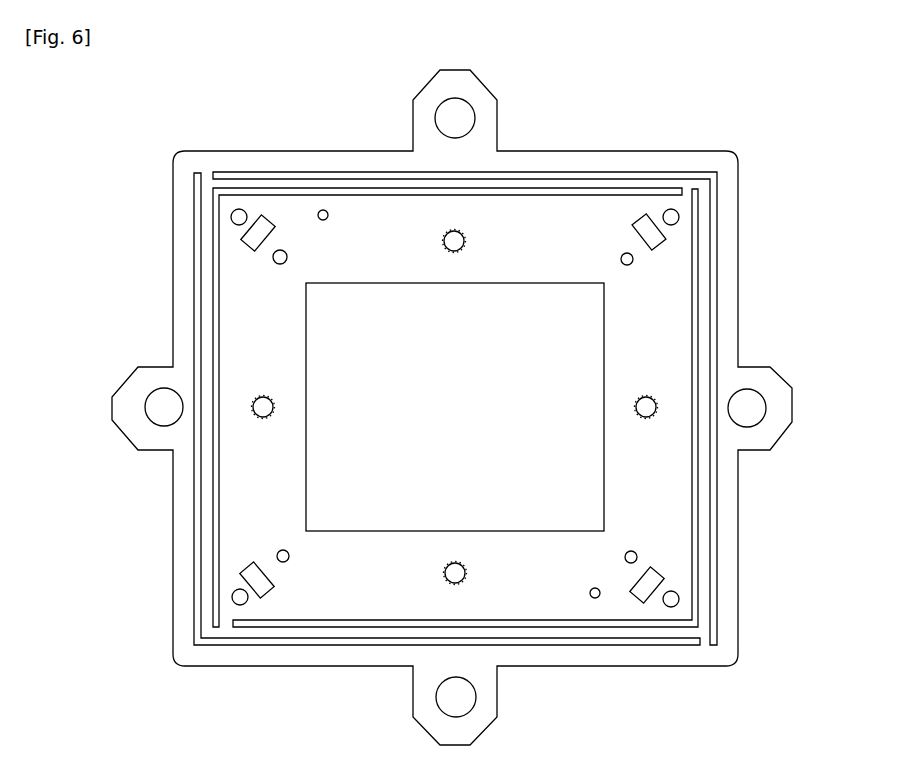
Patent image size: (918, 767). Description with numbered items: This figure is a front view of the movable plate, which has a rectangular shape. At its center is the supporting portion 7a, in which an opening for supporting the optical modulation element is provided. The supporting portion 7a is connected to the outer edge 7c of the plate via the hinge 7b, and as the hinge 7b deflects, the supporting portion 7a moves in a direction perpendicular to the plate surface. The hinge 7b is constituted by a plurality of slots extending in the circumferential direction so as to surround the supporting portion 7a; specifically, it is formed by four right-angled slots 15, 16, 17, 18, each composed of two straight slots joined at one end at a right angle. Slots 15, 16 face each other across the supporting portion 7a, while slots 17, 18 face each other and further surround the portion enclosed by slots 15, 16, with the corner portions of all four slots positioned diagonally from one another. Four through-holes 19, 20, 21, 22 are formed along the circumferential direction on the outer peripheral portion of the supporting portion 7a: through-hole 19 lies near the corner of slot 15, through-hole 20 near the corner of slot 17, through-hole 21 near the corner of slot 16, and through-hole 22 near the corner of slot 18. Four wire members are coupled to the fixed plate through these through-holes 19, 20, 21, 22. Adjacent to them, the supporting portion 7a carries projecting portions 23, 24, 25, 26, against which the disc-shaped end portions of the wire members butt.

The supporting portion 7a is at (262, 528).
The hinge 7b is at (205, 502).
The outer edge 7c is at (180, 213).
The right-angled slot 15 is at (378, 188).
The right-angled slot 16 is at (373, 627).
The right-angled slot 17 is at (715, 325).
The right-angled slot 18 is at (193, 302).
The through-hole 19 is at (231, 217).
The through-hole 20 is at (680, 218).
The through-hole 21 is at (680, 600).
The through-hole 22 is at (232, 598).
The projecting portion 23 is at (263, 214).
The projecting portion 24 is at (643, 213).
The projecting portion 25 is at (645, 607).
The projecting portion 26 is at (243, 578).